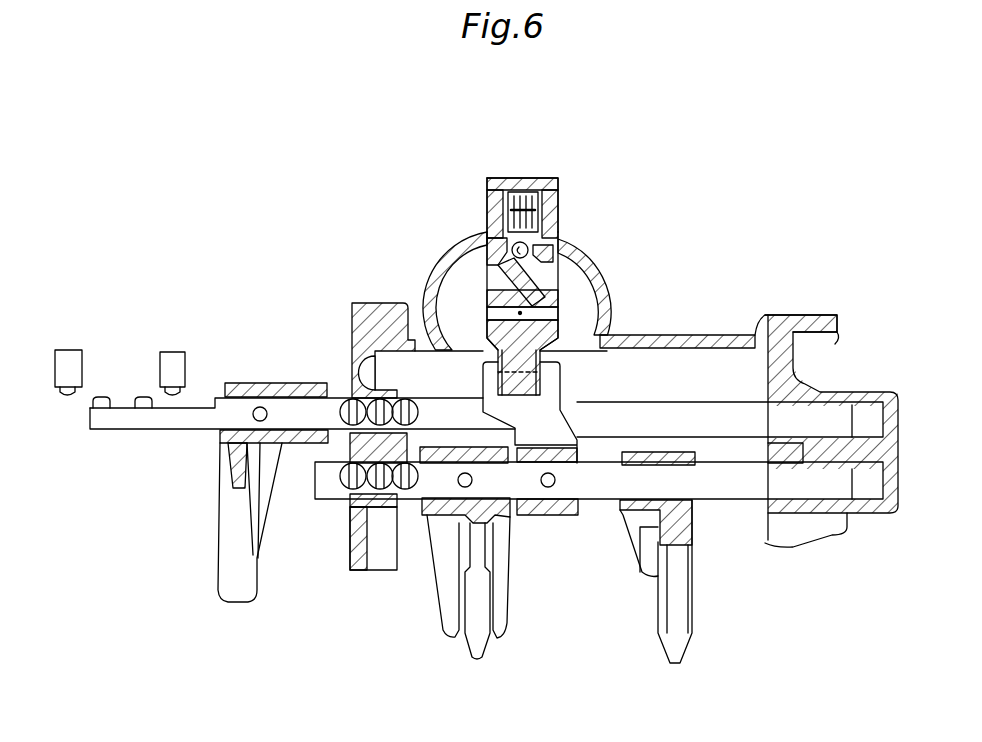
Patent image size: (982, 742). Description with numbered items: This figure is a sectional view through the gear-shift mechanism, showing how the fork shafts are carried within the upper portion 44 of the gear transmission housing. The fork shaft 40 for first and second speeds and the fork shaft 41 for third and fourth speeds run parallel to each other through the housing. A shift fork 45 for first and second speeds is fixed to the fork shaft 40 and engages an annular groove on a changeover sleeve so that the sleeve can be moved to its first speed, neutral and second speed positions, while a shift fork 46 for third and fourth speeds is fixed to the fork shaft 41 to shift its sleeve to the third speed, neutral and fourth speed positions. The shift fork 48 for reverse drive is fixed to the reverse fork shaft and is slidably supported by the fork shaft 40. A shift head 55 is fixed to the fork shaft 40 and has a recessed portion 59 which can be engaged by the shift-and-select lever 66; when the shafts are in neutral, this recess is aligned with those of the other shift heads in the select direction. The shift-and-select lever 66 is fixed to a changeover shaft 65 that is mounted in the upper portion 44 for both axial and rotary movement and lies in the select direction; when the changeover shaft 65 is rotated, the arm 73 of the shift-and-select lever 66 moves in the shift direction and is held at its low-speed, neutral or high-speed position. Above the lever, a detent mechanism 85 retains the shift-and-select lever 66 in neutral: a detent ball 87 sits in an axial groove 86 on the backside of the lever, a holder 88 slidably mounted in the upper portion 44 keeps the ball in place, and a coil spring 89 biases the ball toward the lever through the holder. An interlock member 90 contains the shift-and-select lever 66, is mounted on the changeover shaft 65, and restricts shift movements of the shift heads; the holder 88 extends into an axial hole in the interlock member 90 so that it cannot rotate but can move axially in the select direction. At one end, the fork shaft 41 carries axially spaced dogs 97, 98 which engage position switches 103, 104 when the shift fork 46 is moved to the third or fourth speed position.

The fork shaft for 1st–2nd speeds 40 is at (743, 500).
The fork shaft for 3rd–4th speeds 41 is at (290, 417).
The upper portion of the gear transmission housing 44 is at (812, 322).
The shift fork for 1st–2nd speeds 45 is at (477, 636).
The shift fork for 3rd–4th speeds 46 is at (241, 600).
The shift fork for reverse drive 48 is at (676, 648).
The shift head 55 is at (558, 518).
The recessed portion 59 is at (490, 330).
The changeover shaft 65 is at (505, 298).
The shift-and-select lever 66 is at (557, 286).
The arm of the shift-and-select lever 73 is at (567, 338).
The detent mechanism 85 is at (523, 178).
The axial groove 86 is at (550, 258).
The detent ball 87 is at (537, 240).
The holder 88 is at (557, 222).
The coil spring 89 is at (528, 192).
The interlock member 90 is at (492, 250).
The dog 97 is at (143, 397).
The dog 98 is at (102, 396).
The position switch 103 is at (173, 362).
The position switch 104 is at (70, 358).